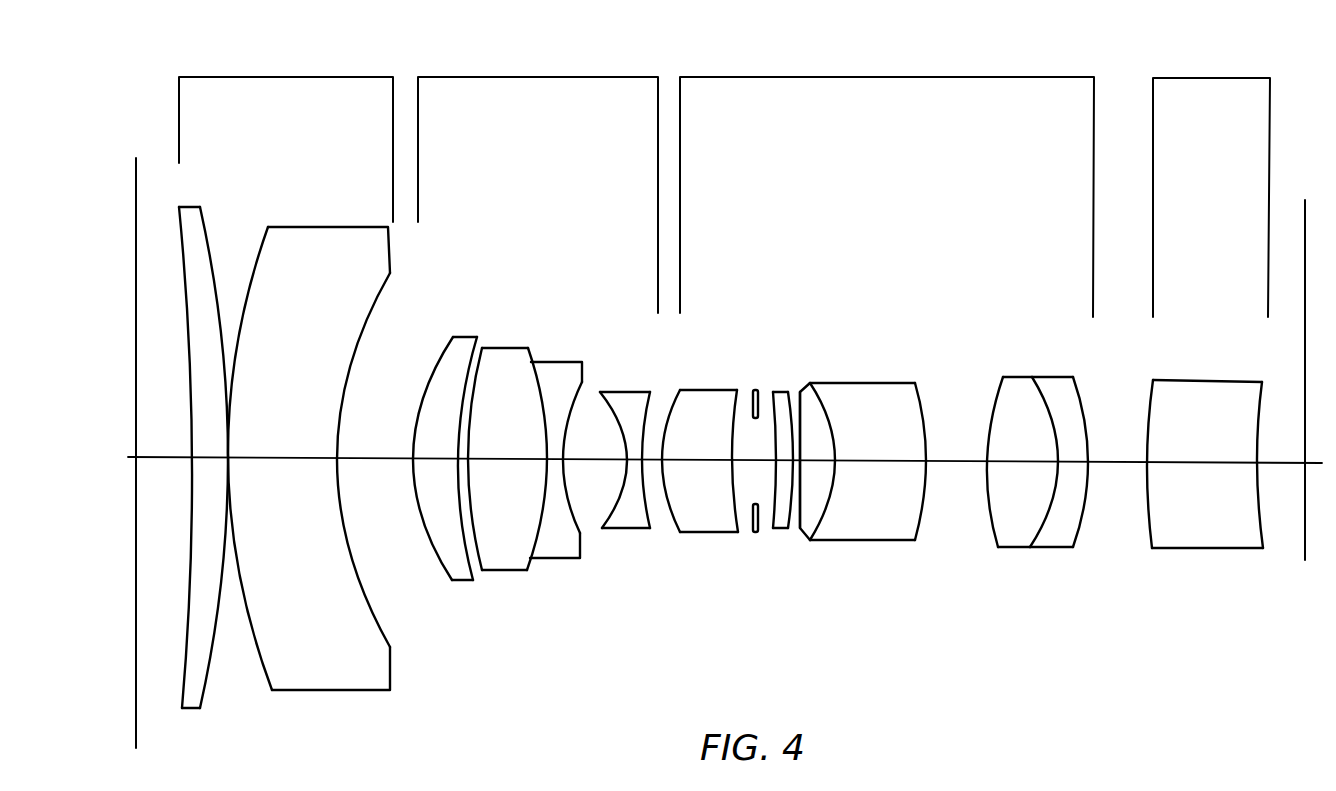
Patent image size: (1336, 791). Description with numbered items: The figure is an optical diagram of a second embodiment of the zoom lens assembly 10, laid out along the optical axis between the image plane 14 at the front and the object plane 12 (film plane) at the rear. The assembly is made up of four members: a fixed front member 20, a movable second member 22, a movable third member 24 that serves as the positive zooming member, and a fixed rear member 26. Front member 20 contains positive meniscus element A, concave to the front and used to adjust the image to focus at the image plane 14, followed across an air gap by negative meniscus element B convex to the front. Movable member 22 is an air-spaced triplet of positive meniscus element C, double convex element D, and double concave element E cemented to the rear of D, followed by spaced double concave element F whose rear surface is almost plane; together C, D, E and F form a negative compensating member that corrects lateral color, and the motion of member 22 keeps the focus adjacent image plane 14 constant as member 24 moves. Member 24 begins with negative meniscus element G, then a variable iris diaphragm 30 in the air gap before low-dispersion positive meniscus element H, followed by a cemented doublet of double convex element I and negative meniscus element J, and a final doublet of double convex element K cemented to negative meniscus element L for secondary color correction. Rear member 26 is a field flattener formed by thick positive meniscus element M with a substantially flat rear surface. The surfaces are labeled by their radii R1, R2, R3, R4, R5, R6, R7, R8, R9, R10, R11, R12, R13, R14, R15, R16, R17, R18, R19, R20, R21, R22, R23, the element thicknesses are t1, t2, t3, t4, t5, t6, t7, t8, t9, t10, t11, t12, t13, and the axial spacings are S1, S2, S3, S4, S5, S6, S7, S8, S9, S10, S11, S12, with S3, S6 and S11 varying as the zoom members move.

The zoom lens assembly 10 is at (708, 60).
The object plane 12 is at (1305, 200).
The image plane 14 is at (136, 158).
The front member 20 is at (312, 76).
The second member 22 is at (561, 77).
The third member 24 is at (906, 77).
The rear member 26 is at (1251, 78).
The variable iris diaphragm 30 is at (757, 532).
The positive meniscus element A is at (187, 468).
The negative meniscus element B is at (329, 478).
The positive meniscus lens element C is at (442, 473).
The double convex lens element D is at (518, 478).
The double concave lens element E is at (574, 487).
The double concave lens element F is at (637, 492).
The negative meniscus element G is at (710, 479).
The positive meniscus lens H is at (789, 479).
The double convex lens element I is at (853, 488).
The negative meniscus lens element J is at (888, 498).
The double convex lens element K is at (1017, 480).
The negative meniscus lens L is at (1078, 489).
The thick positive meniscus lens element M is at (1215, 481).
The radius of front surface of lens A R1 is at (186, 232).
The radius of rear surface of lens A R2 is at (210, 228).
The radius of front surface of lens B R3 is at (262, 247).
The radius of rear surface of lens B R4 is at (392, 287).
The radius of front surface of lens C R5 is at (432, 383).
The radius of rear surface of lens C R6 is at (478, 372).
The radius of front surface of lens D R7 is at (475, 459).
The radius of cemented surface of lenses D and E R8 is at (537, 370).
The radius of rear surface of lens E R9 is at (582, 395).
The radius of front surface of lens F R10 is at (602, 395).
The radius of rear surface of lens F R11 is at (660, 395).
The radius of front surface of lens G R12 is at (690, 385).
The radius of rear surface of lens G R13 is at (752, 400).
The radius of front surface of lens H R14 is at (775, 390).
The radius of rear surface of lens H R15 is at (790, 400).
The radius of front surface of lens I R16 is at (812, 395).
The radius of cemented surface of lenses I and J R17 is at (825, 410).
The radius of rear surface of lens J R18 is at (920, 400).
The radius of front surface of lens K R19 is at (990, 395).
The radius of cemented surface of lenses K and L R20 is at (1050, 395).
The radius of rear surface of lens L R21 is at (1085, 395).
The radius of front surface of lens M R22 is at (1150, 385).
The radius of rear surface of lens M R23 is at (1265, 392).
The spacing S1 is at (158, 457).
The spacing S2 is at (228, 322).
The variable spacing S3 is at (392, 457).
The spacing S4 is at (465, 470).
The spacing S5 is at (616, 455).
The variable spacing S6 is at (657, 510).
The spacing S7 is at (744, 512).
The spacing S8 is at (763, 520).
The spacing S9 is at (798, 538).
The spacing S10 is at (985, 458).
The variable spacing S11 is at (1128, 446).
The spacing S12 is at (1283, 462).
The thickness t1 is at (200, 505).
The thickness t2 is at (268, 432).
The thickness t3 is at (431, 437).
The thickness t4 is at (491, 437).
The thickness t5 is at (551, 520).
The thickness t6 is at (617, 498).
The thickness t7 is at (679, 492).
The thickness t8 is at (782, 440).
The thickness t9 is at (811, 432).
The thickness t10 is at (864, 432).
The thickness t11 is at (1024, 435).
The thickness t12 is at (1064, 520).
The thickness t13 is at (1186, 512).